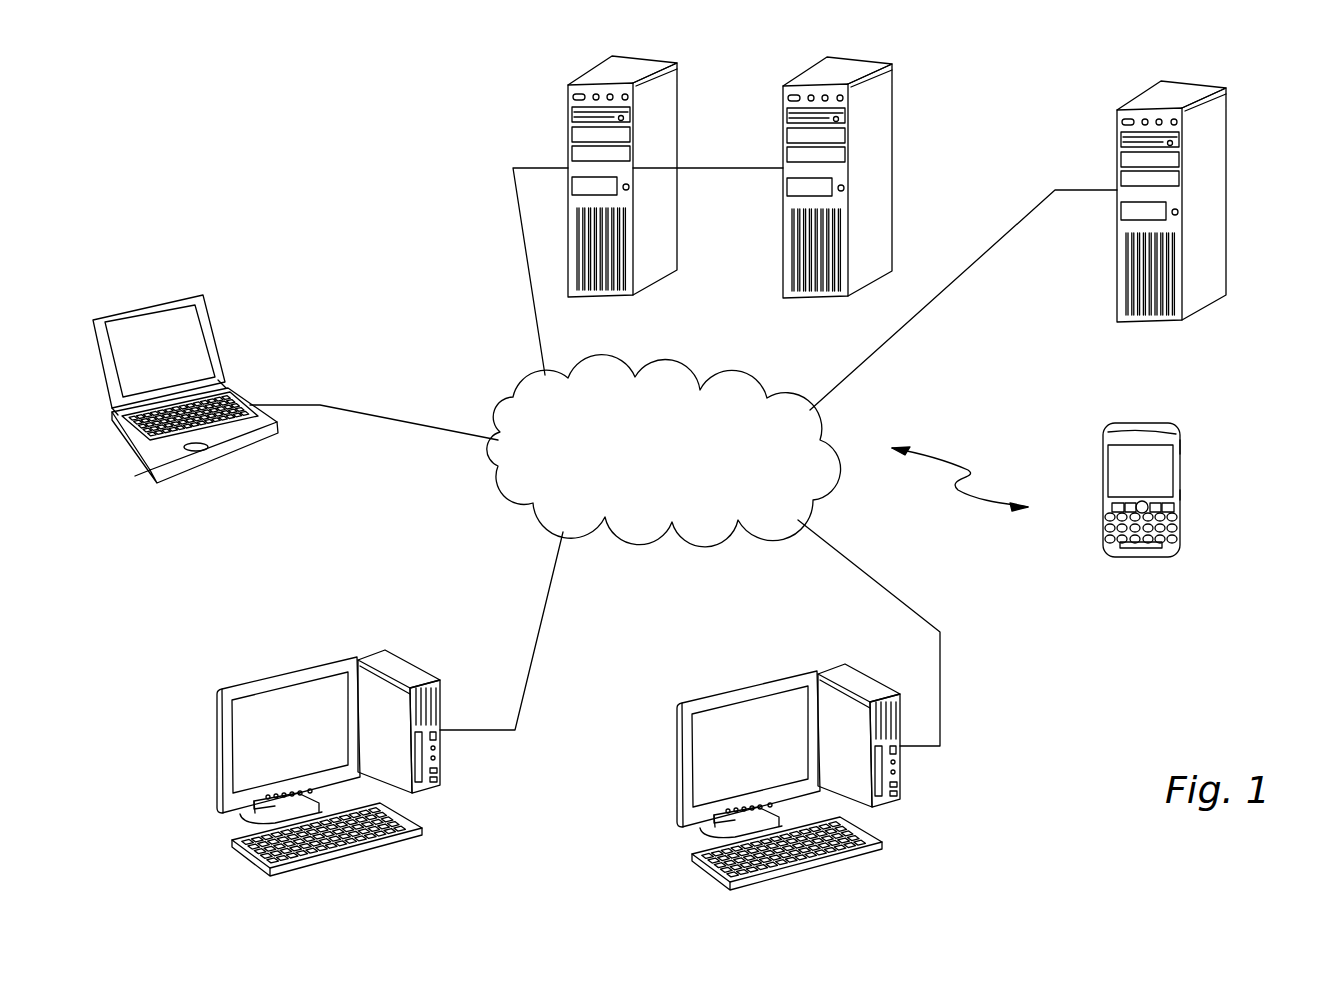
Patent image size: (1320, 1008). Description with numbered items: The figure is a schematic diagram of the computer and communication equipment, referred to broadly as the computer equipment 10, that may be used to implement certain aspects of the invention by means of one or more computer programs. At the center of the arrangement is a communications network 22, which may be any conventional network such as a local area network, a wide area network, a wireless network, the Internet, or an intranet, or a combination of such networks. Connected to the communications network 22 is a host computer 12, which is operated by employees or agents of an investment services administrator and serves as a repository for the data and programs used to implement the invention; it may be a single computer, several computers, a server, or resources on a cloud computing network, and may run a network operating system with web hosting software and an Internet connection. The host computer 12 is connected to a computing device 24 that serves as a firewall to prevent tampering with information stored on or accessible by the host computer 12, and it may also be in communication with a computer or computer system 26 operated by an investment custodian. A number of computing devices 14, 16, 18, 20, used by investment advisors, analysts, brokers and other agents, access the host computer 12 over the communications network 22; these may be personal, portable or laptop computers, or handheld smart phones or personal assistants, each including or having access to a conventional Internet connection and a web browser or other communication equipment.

The computer equipment 10 is at (457, 130).
The host computer 12 is at (888, 114).
The computing device 14 is at (240, 447).
The computing device 16 is at (402, 840).
The computing device 18 is at (873, 850).
The computing device 20 is at (1170, 548).
The communications network 22 is at (652, 527).
The computing device 24 is at (652, 277).
The computer system 26 is at (1215, 268).